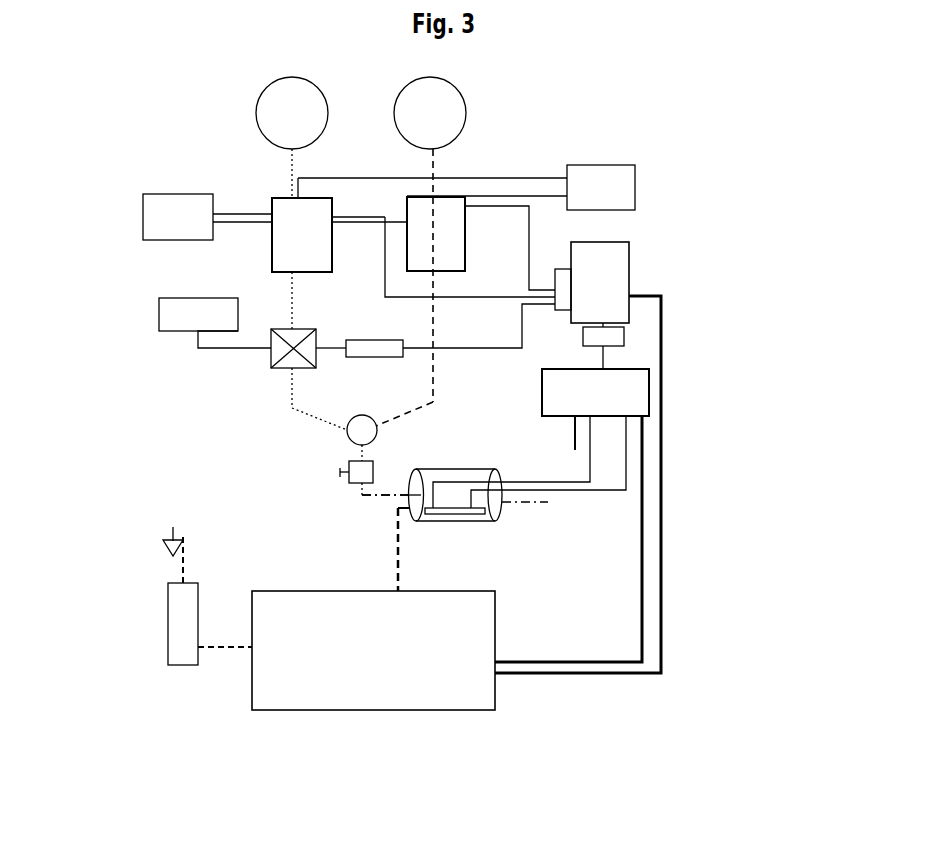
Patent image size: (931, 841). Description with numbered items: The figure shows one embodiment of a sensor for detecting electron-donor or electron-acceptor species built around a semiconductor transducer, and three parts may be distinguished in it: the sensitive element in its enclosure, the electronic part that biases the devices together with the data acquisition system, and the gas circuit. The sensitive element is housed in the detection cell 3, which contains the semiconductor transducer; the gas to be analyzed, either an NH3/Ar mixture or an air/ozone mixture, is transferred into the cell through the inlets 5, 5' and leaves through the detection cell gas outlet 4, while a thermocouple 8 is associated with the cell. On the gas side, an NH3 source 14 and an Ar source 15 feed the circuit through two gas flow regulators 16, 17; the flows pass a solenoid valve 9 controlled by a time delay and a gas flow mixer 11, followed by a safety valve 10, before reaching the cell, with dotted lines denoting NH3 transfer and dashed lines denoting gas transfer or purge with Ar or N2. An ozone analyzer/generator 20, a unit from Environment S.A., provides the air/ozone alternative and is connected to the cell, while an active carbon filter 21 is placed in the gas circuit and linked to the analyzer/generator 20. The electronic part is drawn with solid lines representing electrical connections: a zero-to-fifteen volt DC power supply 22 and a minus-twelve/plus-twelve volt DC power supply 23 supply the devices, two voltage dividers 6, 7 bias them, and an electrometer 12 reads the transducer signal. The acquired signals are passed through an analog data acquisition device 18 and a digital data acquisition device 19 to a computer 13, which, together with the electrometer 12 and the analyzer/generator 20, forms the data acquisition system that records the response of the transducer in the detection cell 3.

The detection cell 3 is at (445, 508).
The detection cell gas outlet 4 is at (512, 508).
The detection cell gas inlet 5 is at (360, 549).
The detection cell gas inlet 5' is at (341, 519).
The voltage divider 6 is at (623, 168).
The voltage divider 7 is at (370, 330).
The thermocouple 8 is at (545, 410).
The solenoid valve 9 is at (263, 368).
The safety valve 10 is at (337, 465).
The gas flow mixer 11 is at (347, 439).
The electrometer 12 is at (637, 382).
The computer 13 is at (593, 267).
The NH3 source 14 is at (292, 113).
The Ar source 15 is at (430, 113).
The gas flow regulator 16 is at (450, 233).
The gas flow regulator 17 is at (270, 244).
The analog data acquisition device 18 is at (553, 273).
The digital data acquisition device 19 is at (607, 331).
The ozone analyzer/generator 20 is at (430, 722).
The active carbon filter 21 is at (165, 617).
The 0-15 volt DC power supply 22 is at (163, 182).
The -12/+12 volt DC power supply 23 is at (165, 333).